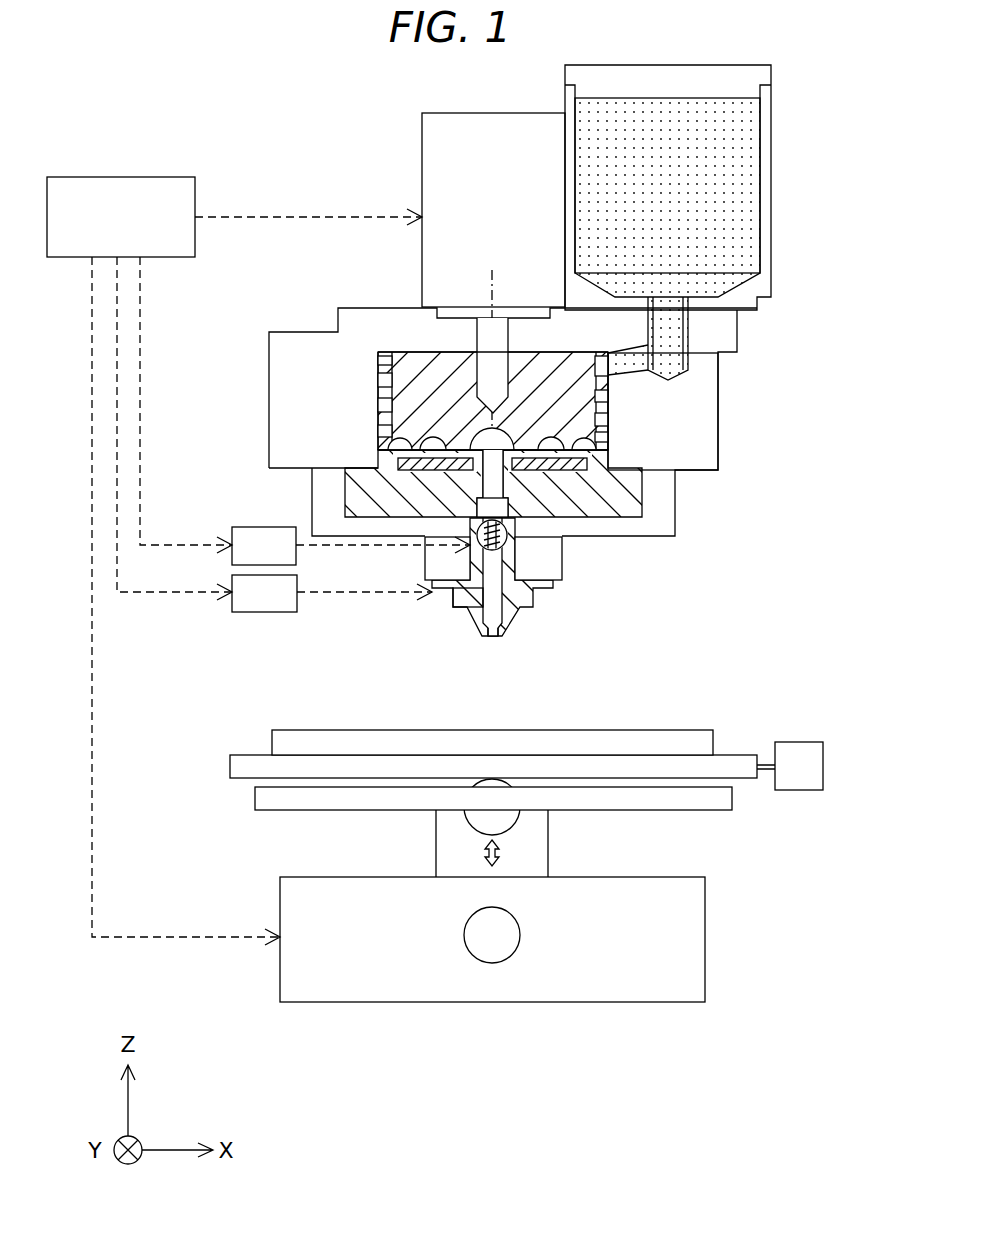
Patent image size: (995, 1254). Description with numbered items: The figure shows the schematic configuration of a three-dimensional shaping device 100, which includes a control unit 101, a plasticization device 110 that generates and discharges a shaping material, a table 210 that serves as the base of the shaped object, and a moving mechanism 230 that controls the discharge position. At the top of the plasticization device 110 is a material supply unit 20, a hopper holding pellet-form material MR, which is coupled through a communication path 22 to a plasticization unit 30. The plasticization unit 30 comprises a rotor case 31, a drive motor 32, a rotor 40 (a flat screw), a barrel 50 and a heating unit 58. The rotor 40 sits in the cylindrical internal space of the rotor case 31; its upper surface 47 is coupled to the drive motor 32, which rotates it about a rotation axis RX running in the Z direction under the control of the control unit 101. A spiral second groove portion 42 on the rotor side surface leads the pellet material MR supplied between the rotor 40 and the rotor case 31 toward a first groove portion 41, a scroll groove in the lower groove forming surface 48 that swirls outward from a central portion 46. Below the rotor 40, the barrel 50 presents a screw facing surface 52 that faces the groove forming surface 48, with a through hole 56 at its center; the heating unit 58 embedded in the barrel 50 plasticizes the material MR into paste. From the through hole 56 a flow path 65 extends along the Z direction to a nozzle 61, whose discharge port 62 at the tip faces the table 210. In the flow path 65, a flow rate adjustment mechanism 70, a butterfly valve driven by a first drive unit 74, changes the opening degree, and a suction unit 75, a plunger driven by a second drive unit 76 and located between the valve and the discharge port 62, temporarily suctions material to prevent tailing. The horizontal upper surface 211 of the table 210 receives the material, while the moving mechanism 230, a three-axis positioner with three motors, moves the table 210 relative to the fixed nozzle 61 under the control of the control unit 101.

The three-dimensional shaping device 100 is at (172, 108).
The control unit 101 is at (118, 177).
The plasticization device 110 is at (363, 105).
The material supply unit 20 is at (708, 187).
The material MR is at (740, 145).
The communication path 22 is at (670, 342).
The plasticization unit 30 is at (320, 175).
The rotor case 31 is at (345, 306).
The drive motor 32 is at (422, 146).
The rotation axis RX is at (492, 282).
The rotor 40 is at (434, 363).
The first groove portion 41 is at (440, 446).
The second groove portion 42 is at (608, 400).
The central portion 46 is at (402, 380).
The upper surface 47 is at (410, 351).
The groove forming surface 48 is at (392, 462).
The barrel 50 is at (469, 462).
The screw facing surface 52 is at (400, 455).
The through hole 56 is at (640, 516).
The heating unit 58 is at (625, 500).
The nozzle 61 is at (485, 590).
The discharge port 62 is at (493, 638).
The flow path 65 is at (497, 541).
The flow rate adjustment mechanism 70 is at (483, 542).
The first drive unit 74 is at (245, 527).
The suction unit 75 is at (450, 598).
The second drive unit 76 is at (248, 612).
The table 210 is at (660, 738).
The upper surface 211 is at (580, 730).
The moving mechanism 230 is at (533, 846).